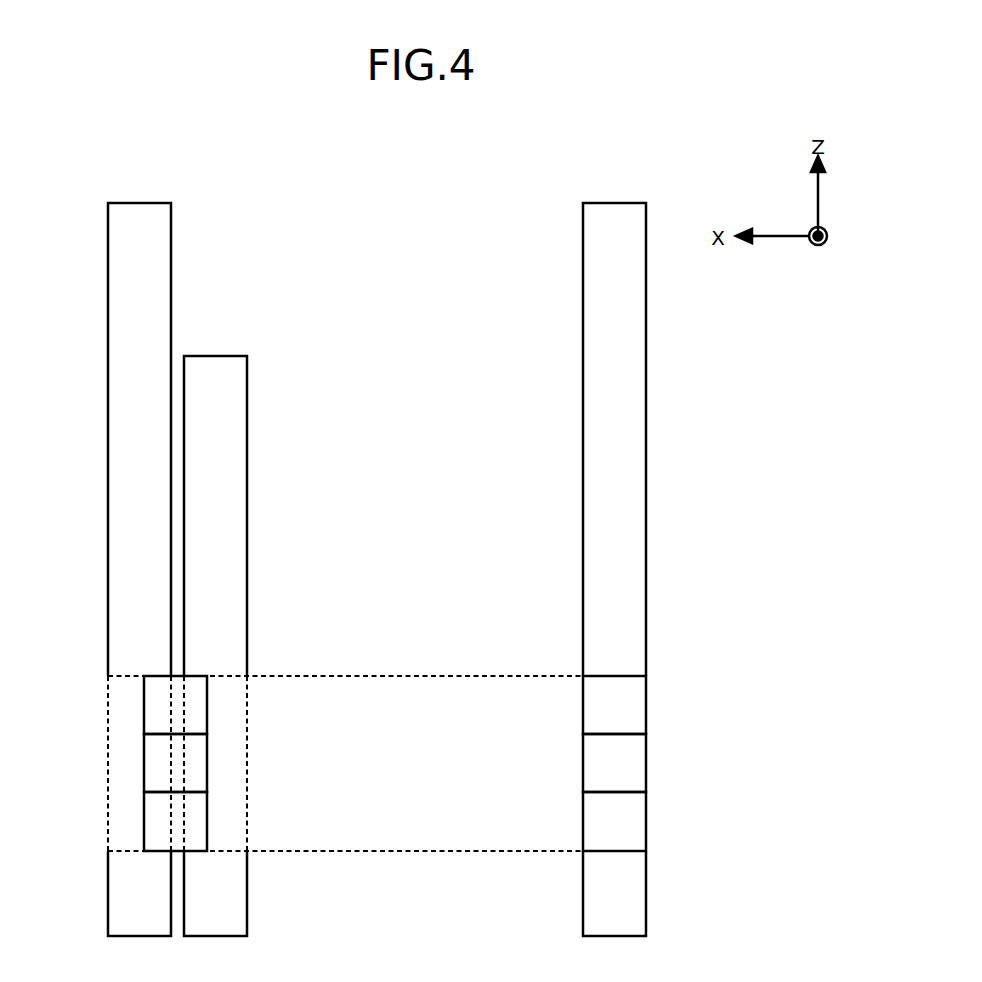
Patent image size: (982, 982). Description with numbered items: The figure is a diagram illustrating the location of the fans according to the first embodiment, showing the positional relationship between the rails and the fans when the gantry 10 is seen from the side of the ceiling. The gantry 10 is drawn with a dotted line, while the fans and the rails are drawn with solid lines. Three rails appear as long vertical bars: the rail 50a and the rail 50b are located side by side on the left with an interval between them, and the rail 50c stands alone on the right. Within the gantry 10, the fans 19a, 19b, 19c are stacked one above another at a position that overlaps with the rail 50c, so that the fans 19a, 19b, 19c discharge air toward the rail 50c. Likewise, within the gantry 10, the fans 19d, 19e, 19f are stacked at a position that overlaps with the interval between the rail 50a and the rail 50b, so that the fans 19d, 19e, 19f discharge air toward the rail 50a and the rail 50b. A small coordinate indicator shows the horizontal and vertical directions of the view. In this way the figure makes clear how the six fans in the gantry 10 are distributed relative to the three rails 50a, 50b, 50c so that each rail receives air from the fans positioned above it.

The rail 50a is at (140, 203).
The rail 50b is at (219, 355).
The rail 50c is at (612, 203).
The gantry 10 is at (380, 852).
The fan 19a is at (634, 708).
The fan 19b is at (634, 767).
The fan 19c is at (634, 825).
The fan 19d is at (156, 704).
The fan 19e is at (156, 766).
The fan 19f is at (156, 824).